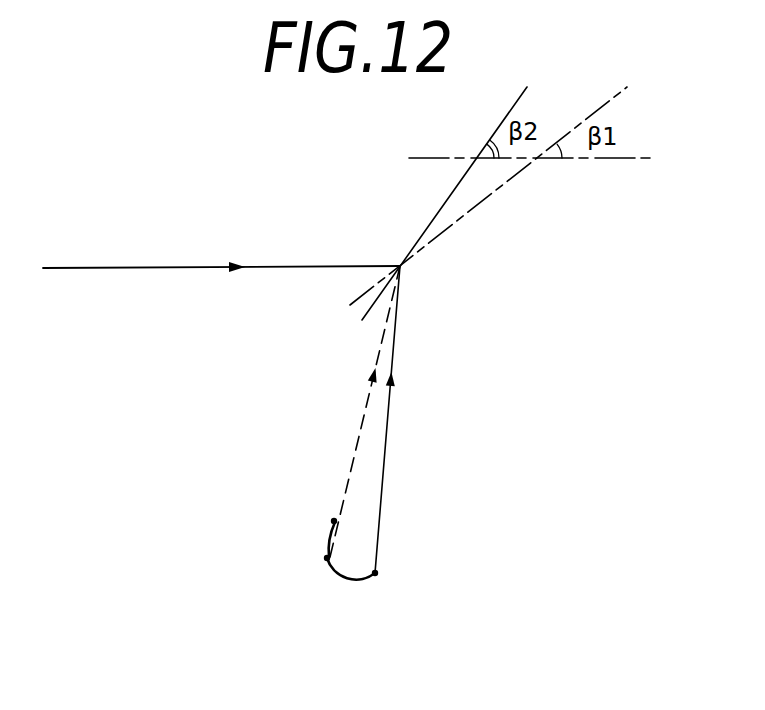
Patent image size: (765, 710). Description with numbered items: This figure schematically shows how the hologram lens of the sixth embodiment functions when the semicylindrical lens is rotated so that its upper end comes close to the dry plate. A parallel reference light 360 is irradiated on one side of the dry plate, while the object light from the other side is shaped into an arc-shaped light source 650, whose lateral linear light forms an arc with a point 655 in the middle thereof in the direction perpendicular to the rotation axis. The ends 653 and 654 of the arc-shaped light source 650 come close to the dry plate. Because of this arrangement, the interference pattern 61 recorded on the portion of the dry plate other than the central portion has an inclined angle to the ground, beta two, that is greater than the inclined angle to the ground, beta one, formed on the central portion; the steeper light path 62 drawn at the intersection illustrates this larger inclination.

The parallel reference light 360 is at (105, 268).
The second deflected light path 62 is at (418, 241).
The interference pattern 61 is at (372, 290).
The arc-shaped light source 650 is at (345, 580).
The end of the arc-shaped light source 653 is at (375, 573).
The end of the arc-shaped light source 654 is at (333, 521).
The middle point of the arc 655 is at (327, 558).